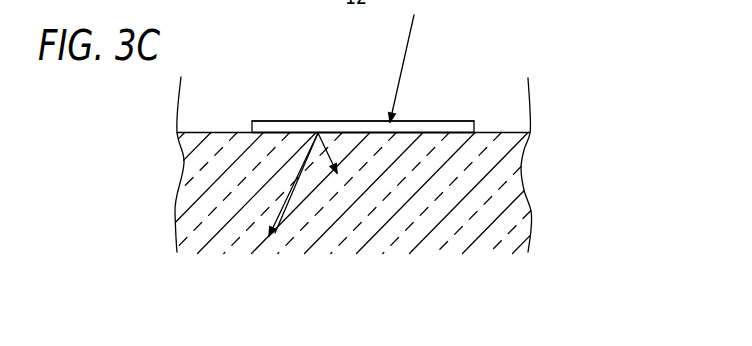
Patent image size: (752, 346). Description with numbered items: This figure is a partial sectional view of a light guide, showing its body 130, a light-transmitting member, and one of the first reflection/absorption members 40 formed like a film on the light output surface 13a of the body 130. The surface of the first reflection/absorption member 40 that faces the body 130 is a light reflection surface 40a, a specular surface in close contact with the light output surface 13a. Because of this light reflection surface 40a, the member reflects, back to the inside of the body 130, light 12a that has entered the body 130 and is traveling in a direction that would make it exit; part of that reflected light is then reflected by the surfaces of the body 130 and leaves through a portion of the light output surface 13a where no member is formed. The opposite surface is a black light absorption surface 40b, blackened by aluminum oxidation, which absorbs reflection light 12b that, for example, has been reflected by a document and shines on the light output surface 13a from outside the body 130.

The body 130 is at (525, 216).
The light output surface 13a is at (506, 133).
The first reflection/absorption member 40 is at (445, 121).
The light reflection surface 40a is at (395, 132).
The black light absorption surface 40b is at (357, 120).
The light 12a is at (275, 233).
The reflection light 12b is at (407, 52).